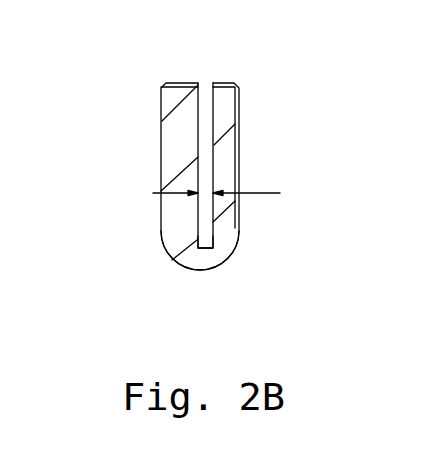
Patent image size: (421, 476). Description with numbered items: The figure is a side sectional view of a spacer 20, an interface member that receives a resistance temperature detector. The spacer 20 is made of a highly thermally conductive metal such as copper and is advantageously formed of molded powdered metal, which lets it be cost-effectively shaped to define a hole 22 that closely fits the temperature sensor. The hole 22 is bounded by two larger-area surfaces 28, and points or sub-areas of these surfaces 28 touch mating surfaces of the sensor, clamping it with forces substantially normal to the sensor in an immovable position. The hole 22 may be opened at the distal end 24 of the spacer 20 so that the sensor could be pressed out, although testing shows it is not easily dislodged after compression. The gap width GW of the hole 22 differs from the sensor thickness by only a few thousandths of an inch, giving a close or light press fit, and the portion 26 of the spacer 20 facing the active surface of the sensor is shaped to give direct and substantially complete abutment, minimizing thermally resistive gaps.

The spacer 20 is at (163, 93).
The hole 22 is at (208, 87).
The distal end 24 is at (212, 270).
The portion 26 is at (207, 210).
The larger-area surfaces 28 is at (198, 143).
The gap width GW is at (230, 193).